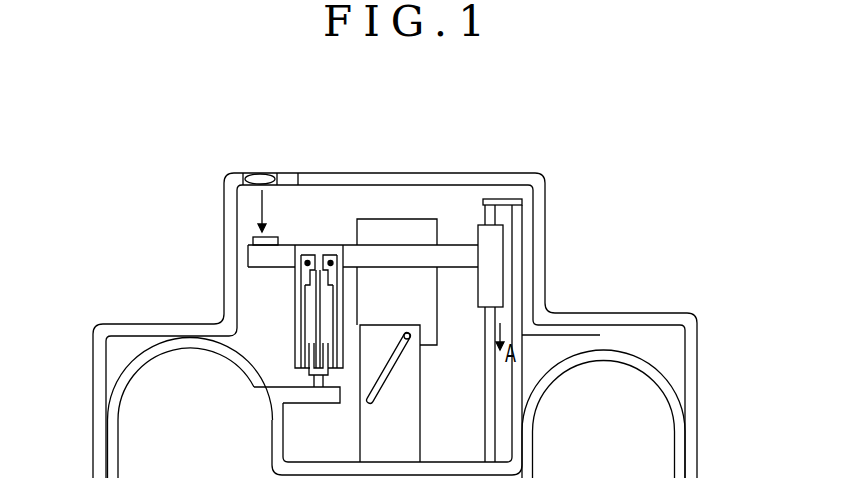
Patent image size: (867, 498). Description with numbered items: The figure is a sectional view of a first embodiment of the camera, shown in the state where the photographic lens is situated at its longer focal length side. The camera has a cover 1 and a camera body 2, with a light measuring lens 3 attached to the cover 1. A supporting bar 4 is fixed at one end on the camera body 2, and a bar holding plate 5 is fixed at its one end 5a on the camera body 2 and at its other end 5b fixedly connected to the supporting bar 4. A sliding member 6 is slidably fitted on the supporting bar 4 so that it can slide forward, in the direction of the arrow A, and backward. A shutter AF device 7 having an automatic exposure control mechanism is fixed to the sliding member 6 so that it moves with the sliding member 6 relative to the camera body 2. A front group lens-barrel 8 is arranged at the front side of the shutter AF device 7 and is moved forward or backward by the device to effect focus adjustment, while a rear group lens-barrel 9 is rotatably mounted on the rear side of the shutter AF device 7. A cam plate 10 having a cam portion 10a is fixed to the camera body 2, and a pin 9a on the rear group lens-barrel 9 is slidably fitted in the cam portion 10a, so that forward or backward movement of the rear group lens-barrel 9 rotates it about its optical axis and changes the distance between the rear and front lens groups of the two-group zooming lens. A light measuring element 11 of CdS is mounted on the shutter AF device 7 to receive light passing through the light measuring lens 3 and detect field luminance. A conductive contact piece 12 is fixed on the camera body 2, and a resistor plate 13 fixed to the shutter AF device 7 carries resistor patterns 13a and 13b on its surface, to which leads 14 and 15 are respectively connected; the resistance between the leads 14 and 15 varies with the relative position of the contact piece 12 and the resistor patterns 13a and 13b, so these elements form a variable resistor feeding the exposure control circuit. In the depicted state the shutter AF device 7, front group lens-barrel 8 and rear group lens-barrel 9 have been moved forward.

The cover 1 is at (150, 322).
The camera body 2 is at (114, 449).
The light measuring lens 3 is at (262, 175).
The supporting bar 4 is at (485, 382).
The bar holding plate 5 is at (539, 257).
The one end of bar holding plate 5a is at (577, 337).
The other end of bar holding plate 5b is at (487, 198).
The sliding member 6 is at (484, 288).
The shutter AF device 7 is at (460, 244).
The front group lens-barrel 8 is at (421, 218).
The rear group lens-barrel 9 is at (423, 315).
The pin 9a is at (411, 342).
The cam plate 10 is at (410, 434).
The cam portion 10a is at (387, 380).
The light measuring element 11 is at (276, 236).
The conductive contact piece 12 is at (315, 384).
The resistor plate 13 is at (340, 246).
The resistor pattern 13a is at (303, 298).
The resistor pattern 13b is at (325, 327).
The lead 14 is at (308, 248).
The lead 15 is at (330, 248).